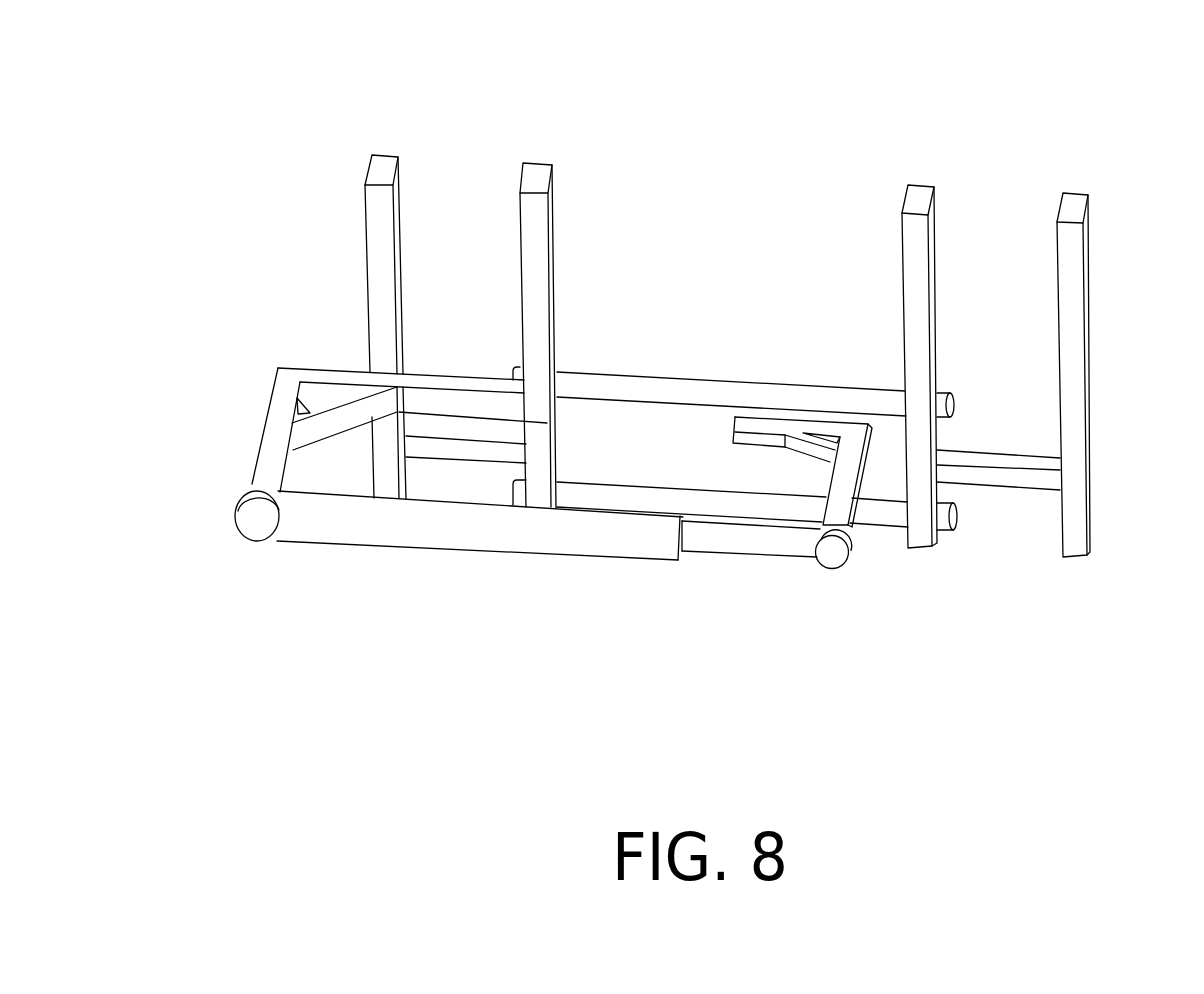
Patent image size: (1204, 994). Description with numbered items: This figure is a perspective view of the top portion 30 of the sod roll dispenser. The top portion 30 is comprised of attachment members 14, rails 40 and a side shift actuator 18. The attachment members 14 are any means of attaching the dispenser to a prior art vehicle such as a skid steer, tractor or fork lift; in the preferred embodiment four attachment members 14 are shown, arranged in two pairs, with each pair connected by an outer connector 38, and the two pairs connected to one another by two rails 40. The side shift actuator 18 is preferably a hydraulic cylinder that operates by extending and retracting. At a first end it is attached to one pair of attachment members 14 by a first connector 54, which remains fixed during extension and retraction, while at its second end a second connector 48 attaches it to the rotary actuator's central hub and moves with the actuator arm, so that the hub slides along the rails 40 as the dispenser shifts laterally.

The top portion 30 is at (305, 135).
The attachment members 14 is at (379, 229).
The rails 40 is at (625, 388).
The second connector 48 is at (772, 428).
The outer connector 38 is at (998, 477).
The first connector 54 is at (458, 401).
The side shift actuator 18 is at (348, 518).